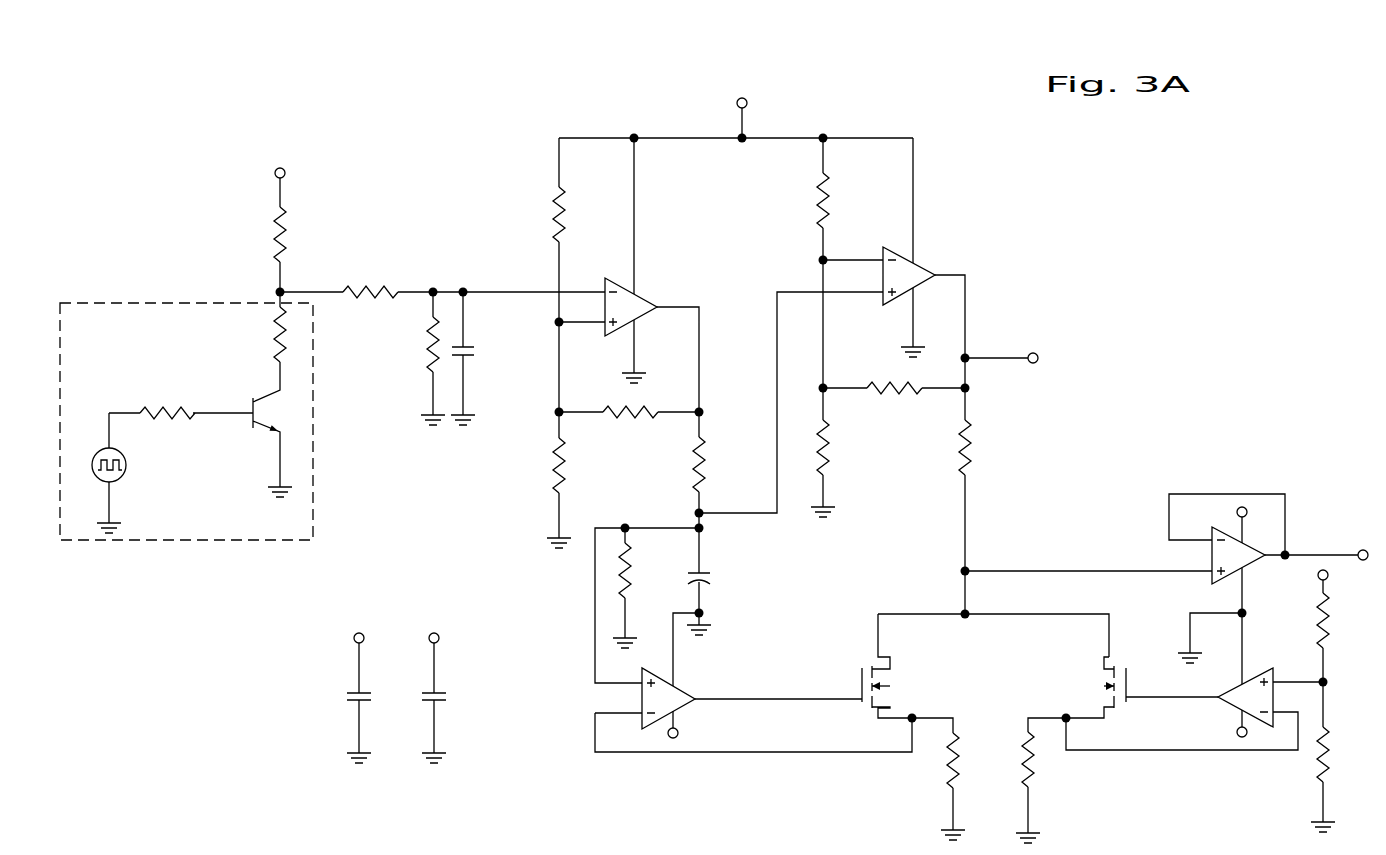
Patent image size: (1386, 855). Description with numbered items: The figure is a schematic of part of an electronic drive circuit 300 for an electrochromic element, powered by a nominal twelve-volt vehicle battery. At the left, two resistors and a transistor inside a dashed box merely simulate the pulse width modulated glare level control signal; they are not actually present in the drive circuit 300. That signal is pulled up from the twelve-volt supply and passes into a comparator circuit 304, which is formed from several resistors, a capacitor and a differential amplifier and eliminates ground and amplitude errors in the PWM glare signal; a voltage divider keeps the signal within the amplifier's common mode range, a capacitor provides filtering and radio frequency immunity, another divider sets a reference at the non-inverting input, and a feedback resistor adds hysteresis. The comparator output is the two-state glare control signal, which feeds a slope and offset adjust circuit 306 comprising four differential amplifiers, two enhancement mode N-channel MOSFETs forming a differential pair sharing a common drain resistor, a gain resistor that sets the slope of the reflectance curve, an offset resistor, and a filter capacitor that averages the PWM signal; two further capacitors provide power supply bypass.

The electronic drive circuit 300 is at (595, 92).
The comparator circuit 304 is at (396, 117).
The slope and offset adjust circuit 306 is at (987, 165).